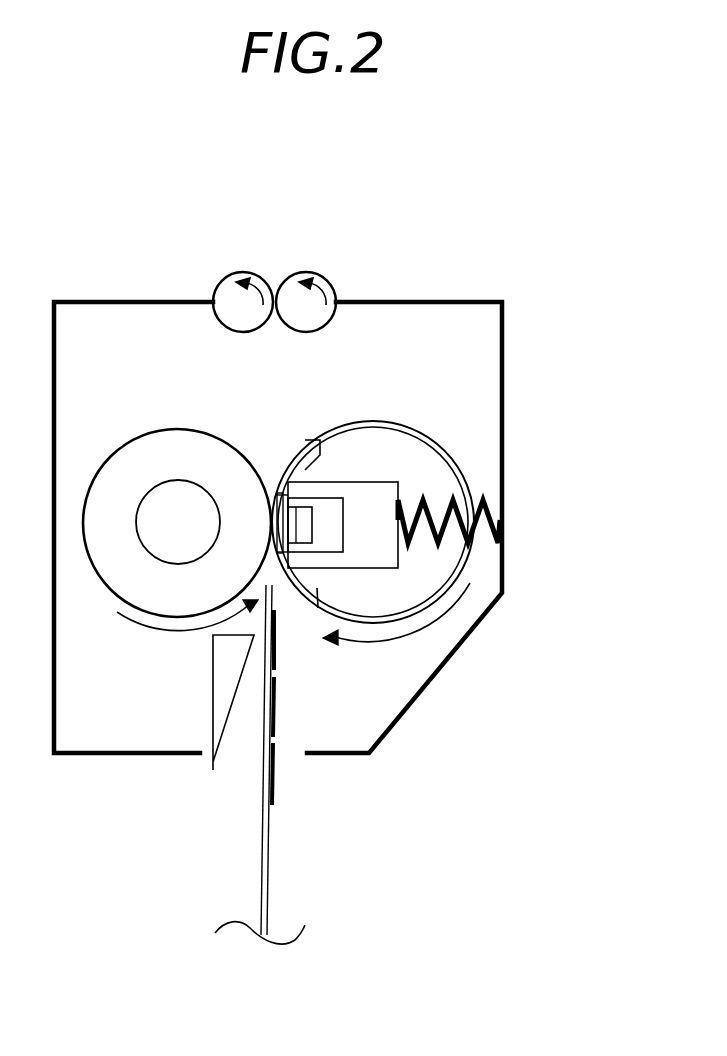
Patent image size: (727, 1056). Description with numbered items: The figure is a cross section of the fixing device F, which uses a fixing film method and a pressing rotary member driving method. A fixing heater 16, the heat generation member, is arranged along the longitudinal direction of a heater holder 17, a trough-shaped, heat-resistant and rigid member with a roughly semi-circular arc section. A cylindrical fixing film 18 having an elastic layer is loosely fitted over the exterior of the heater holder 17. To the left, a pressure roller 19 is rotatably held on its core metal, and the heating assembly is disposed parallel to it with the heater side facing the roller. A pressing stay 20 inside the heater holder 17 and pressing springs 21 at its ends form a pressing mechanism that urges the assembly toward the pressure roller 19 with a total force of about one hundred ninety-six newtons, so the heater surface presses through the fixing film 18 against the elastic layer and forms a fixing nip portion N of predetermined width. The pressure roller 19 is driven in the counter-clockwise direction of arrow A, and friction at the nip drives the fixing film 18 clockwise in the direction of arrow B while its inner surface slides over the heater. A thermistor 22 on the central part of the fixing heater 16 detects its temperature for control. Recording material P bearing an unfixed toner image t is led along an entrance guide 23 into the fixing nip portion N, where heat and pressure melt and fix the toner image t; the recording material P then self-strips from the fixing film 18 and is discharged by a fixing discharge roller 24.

The fixing device F is at (87, 302).
The fixing discharge roller 24 is at (247, 265).
The pressure roller 19 is at (186, 449).
The fixing nip portion N is at (280, 503).
The fixing heater 16 is at (279, 447).
The thermistor 22 is at (304, 500).
The pressing stay 20 is at (380, 493).
The fixing film 18 is at (472, 517).
The heater holder 17 is at (355, 600).
The arrow A is at (187, 635).
The arrow B is at (396, 630).
The pressing spring 21 is at (467, 533).
The entrance guide 23 is at (213, 762).
The toner image t is at (273, 788).
The recording material P is at (268, 864).